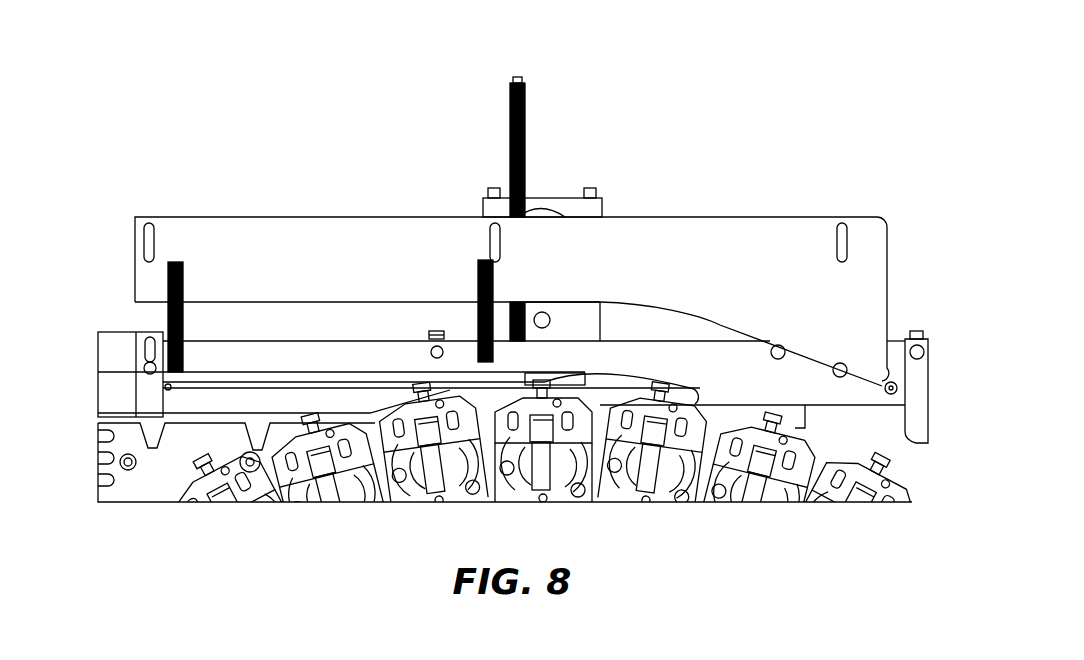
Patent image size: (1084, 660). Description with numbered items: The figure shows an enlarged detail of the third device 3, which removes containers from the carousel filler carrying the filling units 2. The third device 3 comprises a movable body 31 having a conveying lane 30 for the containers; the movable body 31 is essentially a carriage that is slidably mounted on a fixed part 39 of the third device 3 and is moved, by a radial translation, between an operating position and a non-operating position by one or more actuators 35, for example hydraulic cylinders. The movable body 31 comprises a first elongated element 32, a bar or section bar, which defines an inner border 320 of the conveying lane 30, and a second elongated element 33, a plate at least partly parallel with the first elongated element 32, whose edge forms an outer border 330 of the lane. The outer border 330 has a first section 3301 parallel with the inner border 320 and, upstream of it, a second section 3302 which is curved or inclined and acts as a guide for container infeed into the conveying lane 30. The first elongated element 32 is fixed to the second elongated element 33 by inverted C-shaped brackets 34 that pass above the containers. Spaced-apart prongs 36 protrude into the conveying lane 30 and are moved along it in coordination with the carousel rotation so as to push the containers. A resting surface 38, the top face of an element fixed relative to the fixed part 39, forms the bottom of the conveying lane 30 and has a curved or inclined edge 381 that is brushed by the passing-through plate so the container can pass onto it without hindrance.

The filling unit 2 is at (460, 444).
The third device 3 is at (752, 156).
The conveying lane 30 is at (218, 324).
The movable body 31 is at (868, 208).
The first elongated element 32 is at (228, 378).
The second elongated element 33 is at (420, 258).
The bracket 34 is at (478, 283).
The actuator 35 is at (526, 172).
The prong 36 is at (156, 435).
The resting surface 38 is at (192, 447).
The fixed part 39 is at (594, 204).
The inner border 320 is at (291, 370).
The outer border 330 is at (367, 306).
The edge 381 is at (278, 490).
The first section 3301 is at (327, 303).
The second section 3302 is at (741, 331).